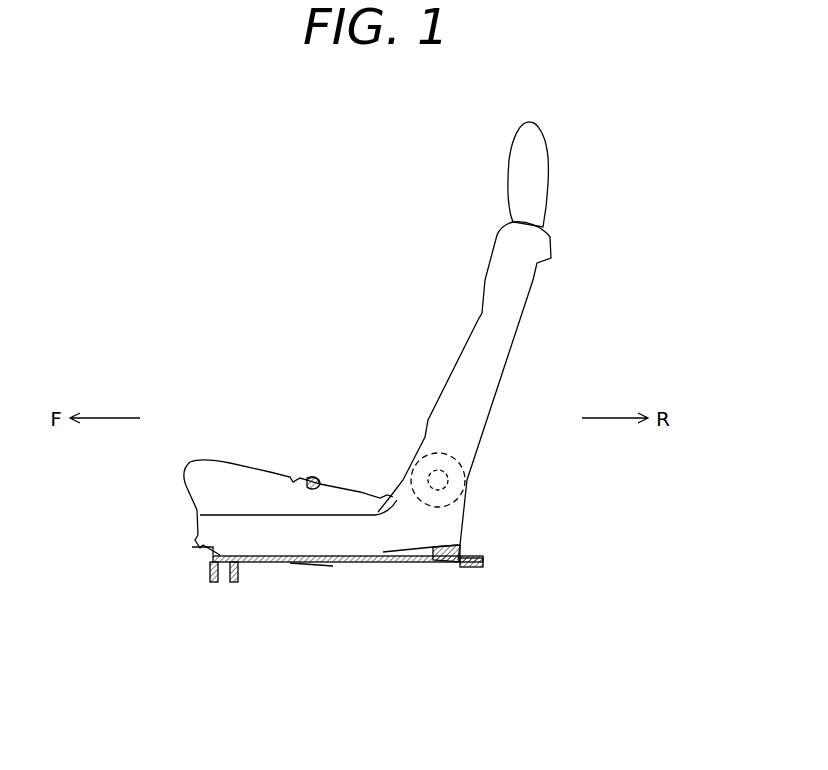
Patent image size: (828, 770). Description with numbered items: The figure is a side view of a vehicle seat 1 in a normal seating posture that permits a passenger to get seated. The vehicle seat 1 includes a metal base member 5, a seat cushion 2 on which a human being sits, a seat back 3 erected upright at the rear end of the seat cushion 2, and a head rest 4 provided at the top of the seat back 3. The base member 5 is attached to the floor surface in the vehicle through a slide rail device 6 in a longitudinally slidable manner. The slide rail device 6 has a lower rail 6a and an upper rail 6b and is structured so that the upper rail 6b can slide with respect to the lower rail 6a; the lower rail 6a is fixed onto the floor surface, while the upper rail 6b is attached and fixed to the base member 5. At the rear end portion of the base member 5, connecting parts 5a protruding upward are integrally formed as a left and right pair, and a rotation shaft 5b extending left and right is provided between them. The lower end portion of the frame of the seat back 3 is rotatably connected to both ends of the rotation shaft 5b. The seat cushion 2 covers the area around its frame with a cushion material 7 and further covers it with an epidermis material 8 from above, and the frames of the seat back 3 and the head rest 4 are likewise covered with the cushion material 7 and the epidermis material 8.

The vehicle seat 1 is at (600, 133).
The seat cushion 2 is at (225, 462).
The seat back 3 is at (457, 352).
The head rest 4 is at (506, 169).
The base member 5 is at (287, 540).
The connecting parts 5a is at (463, 492).
The rotation shaft 5b is at (447, 472).
The slide rail device 6 is at (375, 645).
The lower rail 6a is at (403, 560).
The upper rail 6b is at (450, 562).
The cushion material 7 is at (317, 480).
The epidermis material 8 is at (312, 480).